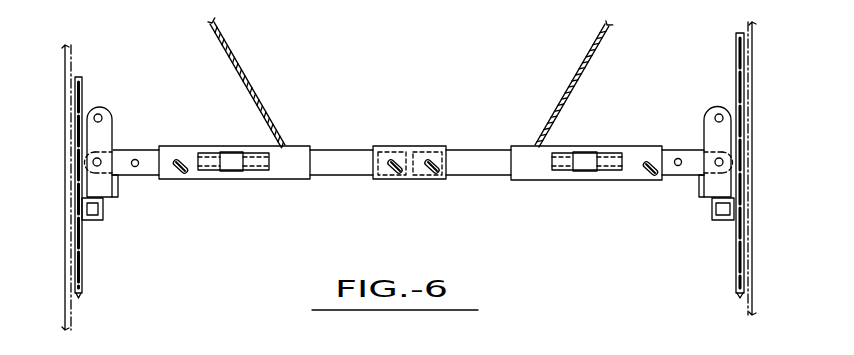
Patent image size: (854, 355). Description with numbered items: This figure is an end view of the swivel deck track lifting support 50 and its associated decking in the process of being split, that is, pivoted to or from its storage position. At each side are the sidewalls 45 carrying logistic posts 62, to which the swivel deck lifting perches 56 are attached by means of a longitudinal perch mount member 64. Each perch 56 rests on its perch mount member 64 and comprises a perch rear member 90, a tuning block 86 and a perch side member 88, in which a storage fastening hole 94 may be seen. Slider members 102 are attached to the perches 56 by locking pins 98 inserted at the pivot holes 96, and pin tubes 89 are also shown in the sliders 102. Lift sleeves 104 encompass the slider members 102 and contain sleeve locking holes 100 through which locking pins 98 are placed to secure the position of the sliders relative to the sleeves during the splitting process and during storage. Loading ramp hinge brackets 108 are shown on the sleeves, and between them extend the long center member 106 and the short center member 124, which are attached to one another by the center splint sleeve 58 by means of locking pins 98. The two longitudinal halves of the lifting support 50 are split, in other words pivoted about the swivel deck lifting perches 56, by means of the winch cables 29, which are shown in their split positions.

The winch cables 29 is at (245, 78).
The sidewalls 45 is at (70, 320).
The swivel deck track lifting support 50 is at (352, 140).
The swivel deck lifting perches 56 is at (698, 135).
The center splint sleeve 58 is at (423, 146).
The logistic posts 62 is at (82, 283).
The longitudinal perch mount member 64 is at (92, 221).
The tuning blocks 86 is at (699, 196).
The perch side members 88 is at (714, 107).
The pin tubes 89 is at (136, 168).
The perch rear members 90 is at (87, 183).
The storage fastening holes 94 is at (101, 115).
The pivot holes 96 is at (100, 158).
The locking pins 98 is at (400, 177).
The sleeve locking holes 100 is at (177, 158).
The slider members 102 is at (679, 149).
The lift sleeves 104 is at (627, 181).
The long center member 106 is at (480, 180).
The loading ramp hinge brackets 108 is at (217, 172).
The short center member 124 is at (335, 176).